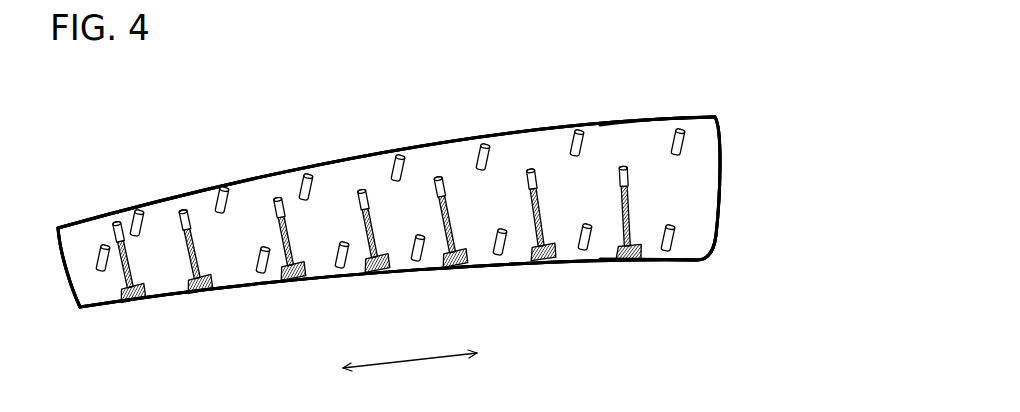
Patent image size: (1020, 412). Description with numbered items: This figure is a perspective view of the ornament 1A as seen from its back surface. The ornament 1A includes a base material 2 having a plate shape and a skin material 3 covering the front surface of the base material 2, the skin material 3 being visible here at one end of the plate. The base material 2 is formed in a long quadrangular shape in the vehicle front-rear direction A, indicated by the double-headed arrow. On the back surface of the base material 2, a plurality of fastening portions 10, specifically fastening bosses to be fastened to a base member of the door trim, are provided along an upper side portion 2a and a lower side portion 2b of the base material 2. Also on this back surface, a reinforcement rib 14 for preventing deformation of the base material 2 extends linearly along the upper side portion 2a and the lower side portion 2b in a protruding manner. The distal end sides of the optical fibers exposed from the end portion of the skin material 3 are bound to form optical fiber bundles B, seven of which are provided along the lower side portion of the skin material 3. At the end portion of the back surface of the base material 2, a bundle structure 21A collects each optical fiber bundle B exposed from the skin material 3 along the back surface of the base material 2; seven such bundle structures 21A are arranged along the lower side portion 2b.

The ornament 1A is at (580, 104).
The base material 2 is at (690, 183).
The upper side portion 2a is at (450, 147).
The lower side portion 2b is at (565, 265).
The skin material 3 is at (72, 278).
The fastening portion 10 is at (140, 215).
The reinforcement rib 14 is at (654, 117).
The bundle structure 21A is at (197, 300).
The vehicle front-rear direction A is at (403, 360).
The optical fiber bundle B is at (214, 243).